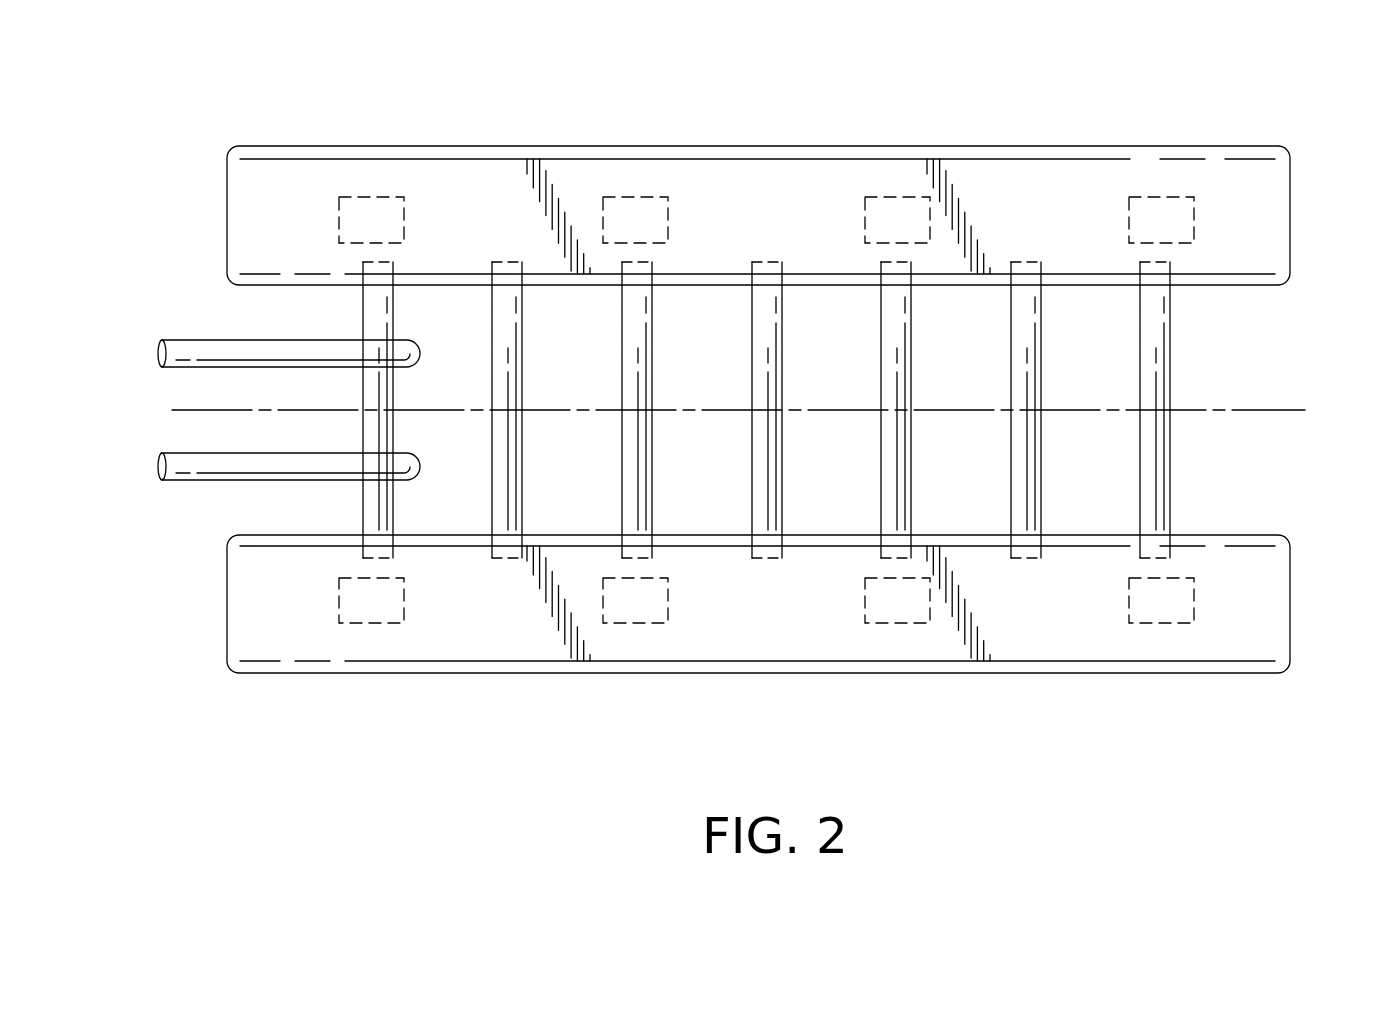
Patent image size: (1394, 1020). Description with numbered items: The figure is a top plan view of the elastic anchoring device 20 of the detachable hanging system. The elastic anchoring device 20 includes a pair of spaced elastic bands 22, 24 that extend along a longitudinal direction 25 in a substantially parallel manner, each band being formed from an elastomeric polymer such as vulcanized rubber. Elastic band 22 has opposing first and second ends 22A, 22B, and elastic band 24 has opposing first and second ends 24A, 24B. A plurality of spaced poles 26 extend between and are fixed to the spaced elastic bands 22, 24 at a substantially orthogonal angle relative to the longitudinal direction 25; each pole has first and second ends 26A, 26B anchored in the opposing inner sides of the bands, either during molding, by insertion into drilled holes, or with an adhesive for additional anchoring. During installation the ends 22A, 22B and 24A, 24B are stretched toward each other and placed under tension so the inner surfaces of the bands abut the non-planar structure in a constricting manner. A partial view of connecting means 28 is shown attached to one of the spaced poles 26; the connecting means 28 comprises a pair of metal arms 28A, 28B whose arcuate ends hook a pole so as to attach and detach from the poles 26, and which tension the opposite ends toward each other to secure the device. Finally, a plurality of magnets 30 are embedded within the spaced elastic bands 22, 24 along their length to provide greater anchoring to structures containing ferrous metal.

The elastic anchoring device 20 is at (848, 98).
The elastic band 22 is at (633, 146).
The first end of elastic band 22A is at (227, 205).
The second end of elastic band 22B is at (1291, 213).
The elastic band 24 is at (1056, 672).
The first end of elastic band 24A is at (227, 627).
The second end of elastic band 24B is at (1291, 618).
The longitudinal direction 25 is at (1293, 408).
The spaced poles 26 is at (1160, 448).
The first end of spaced pole 26A is at (1171, 268).
The second end of spaced pole 26B is at (1171, 553).
The connecting means 28 is at (143, 323).
The metal arm 28A is at (186, 340).
The metal arm 28B is at (186, 483).
The magnets 30 is at (1163, 196).